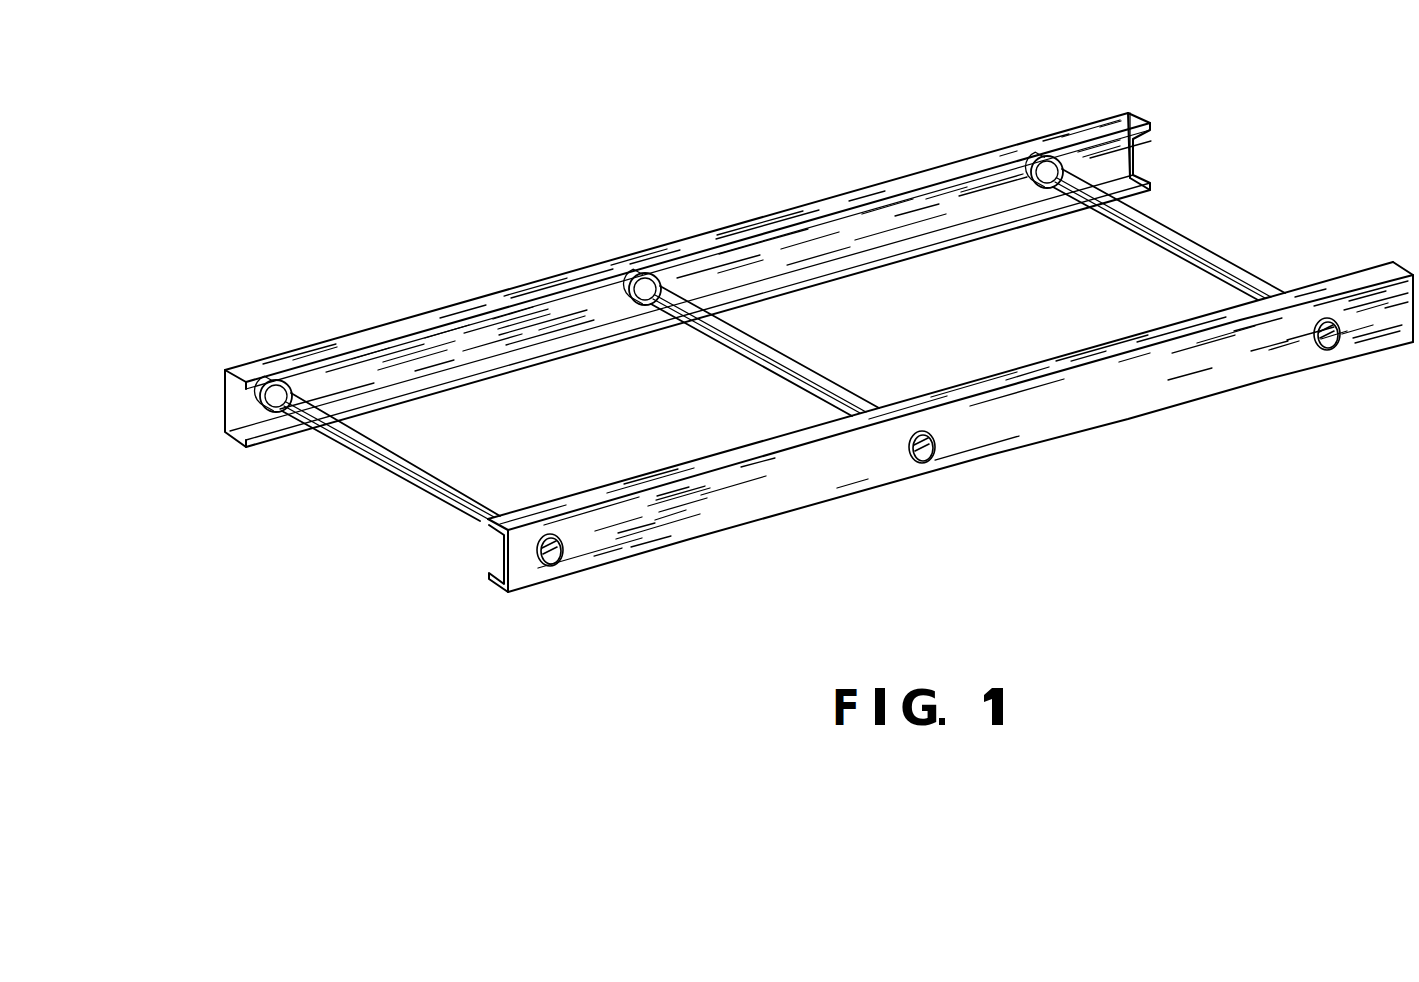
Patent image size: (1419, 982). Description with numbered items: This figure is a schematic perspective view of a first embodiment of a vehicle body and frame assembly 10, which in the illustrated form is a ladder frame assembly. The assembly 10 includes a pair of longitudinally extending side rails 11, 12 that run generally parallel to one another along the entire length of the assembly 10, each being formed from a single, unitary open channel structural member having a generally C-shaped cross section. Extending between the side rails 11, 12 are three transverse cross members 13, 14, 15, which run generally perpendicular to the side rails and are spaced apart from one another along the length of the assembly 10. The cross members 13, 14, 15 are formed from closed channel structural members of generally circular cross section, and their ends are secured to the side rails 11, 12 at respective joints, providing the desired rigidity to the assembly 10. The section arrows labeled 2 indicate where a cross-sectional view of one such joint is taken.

The vehicle body and frame assembly 10 is at (577, 168).
The side rail 11 is at (812, 203).
The side rail 12 is at (1080, 403).
The cross member 13 is at (422, 472).
The cross member 14 is at (785, 360).
The cross member 15 is at (1172, 230).
The section line 2- 2 is at (228, 313).